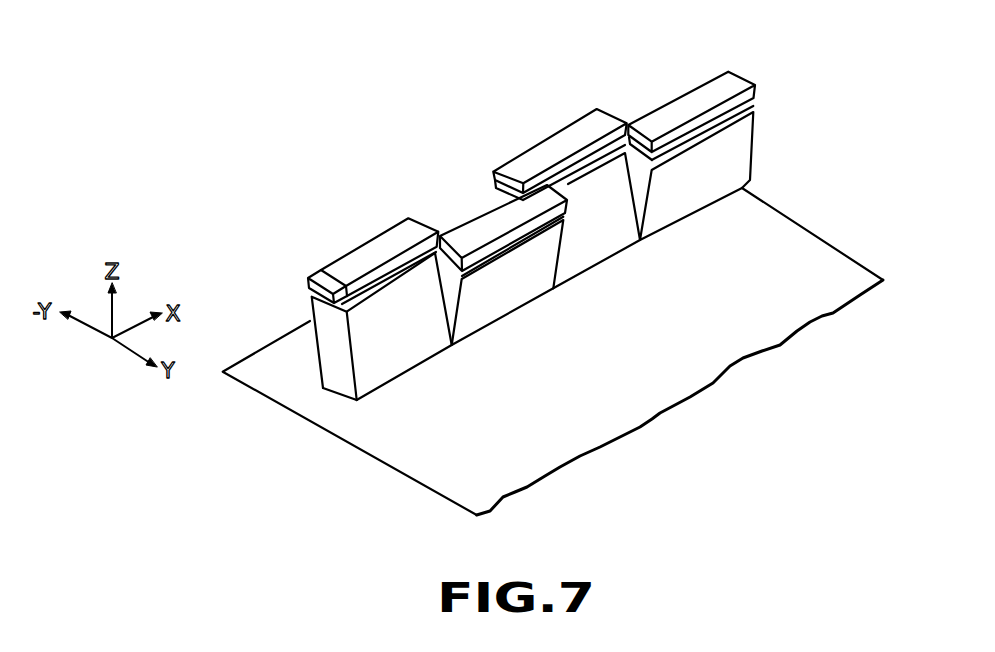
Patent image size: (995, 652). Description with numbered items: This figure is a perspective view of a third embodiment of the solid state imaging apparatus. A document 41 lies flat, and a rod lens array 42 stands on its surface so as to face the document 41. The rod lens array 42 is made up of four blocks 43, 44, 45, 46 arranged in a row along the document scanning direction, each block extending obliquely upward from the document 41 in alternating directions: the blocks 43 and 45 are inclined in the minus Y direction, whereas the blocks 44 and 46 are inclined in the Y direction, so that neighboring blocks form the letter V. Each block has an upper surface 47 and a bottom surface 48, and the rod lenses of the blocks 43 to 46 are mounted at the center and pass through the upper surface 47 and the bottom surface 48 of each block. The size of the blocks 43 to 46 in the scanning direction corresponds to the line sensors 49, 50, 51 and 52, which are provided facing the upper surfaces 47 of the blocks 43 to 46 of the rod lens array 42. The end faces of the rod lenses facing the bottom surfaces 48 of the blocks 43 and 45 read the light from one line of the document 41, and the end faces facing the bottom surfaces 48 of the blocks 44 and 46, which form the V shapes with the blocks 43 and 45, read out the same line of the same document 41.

The document 41 is at (390, 450).
The rod lens array 42 is at (323, 342).
The block 43 is at (393, 304).
The block 44 is at (517, 292).
The block 45 is at (607, 240).
The block 46 is at (727, 153).
The upper surface 47 is at (321, 269).
The bottom surface 48 is at (333, 397).
The line sensor 49 is at (393, 243).
The line sensor 50 is at (493, 227).
The line sensor 51 is at (580, 138).
The line sensor 52 is at (693, 113).